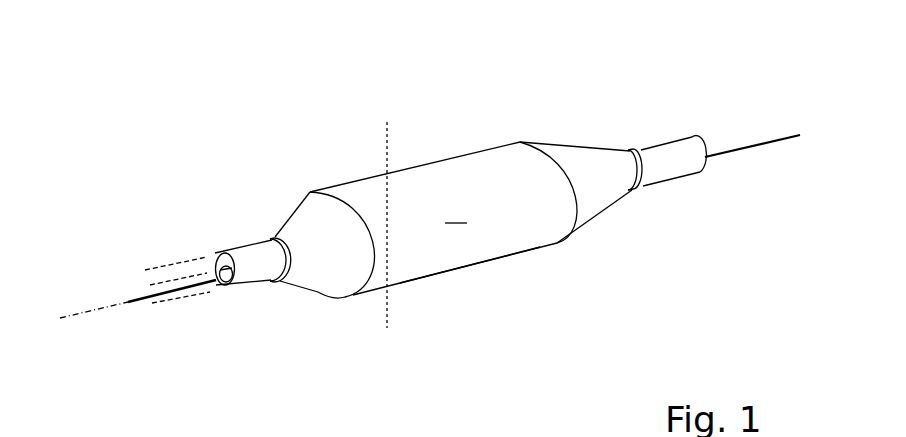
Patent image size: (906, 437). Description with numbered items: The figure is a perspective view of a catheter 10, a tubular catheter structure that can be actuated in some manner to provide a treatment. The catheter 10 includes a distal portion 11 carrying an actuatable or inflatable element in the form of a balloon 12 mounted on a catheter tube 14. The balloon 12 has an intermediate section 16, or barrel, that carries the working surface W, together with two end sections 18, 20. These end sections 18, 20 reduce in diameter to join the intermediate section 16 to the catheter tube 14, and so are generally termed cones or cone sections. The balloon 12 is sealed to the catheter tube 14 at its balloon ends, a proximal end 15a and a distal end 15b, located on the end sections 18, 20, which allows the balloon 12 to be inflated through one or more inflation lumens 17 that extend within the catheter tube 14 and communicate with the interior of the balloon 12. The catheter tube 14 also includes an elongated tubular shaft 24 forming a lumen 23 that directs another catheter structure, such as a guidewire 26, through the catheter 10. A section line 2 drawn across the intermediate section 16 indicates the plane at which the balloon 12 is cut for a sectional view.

The section line 2 is at (387, 122).
The catheter 10 is at (168, 88).
The distal portion 11 is at (322, 100).
The balloon 12 is at (494, 133).
The catheter tube 14 is at (232, 236).
The proximal balloon end 15a is at (273, 233).
The distal balloon end 15b is at (633, 150).
The intermediate section 16 is at (507, 258).
The inflation lumen 17 is at (128, 279).
The end section 18 is at (318, 295).
The end section 20 is at (600, 217).
The lumen 23 is at (219, 290).
The tubular shaft 24 is at (221, 254).
The guidewire 26 is at (138, 303).
The working surface W is at (456, 210).